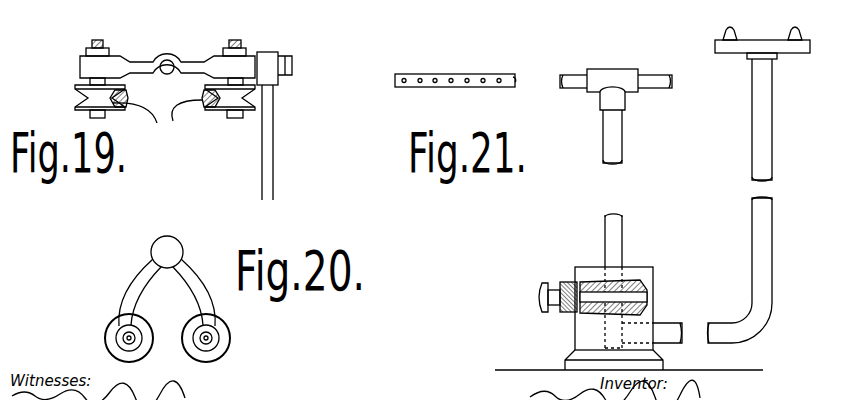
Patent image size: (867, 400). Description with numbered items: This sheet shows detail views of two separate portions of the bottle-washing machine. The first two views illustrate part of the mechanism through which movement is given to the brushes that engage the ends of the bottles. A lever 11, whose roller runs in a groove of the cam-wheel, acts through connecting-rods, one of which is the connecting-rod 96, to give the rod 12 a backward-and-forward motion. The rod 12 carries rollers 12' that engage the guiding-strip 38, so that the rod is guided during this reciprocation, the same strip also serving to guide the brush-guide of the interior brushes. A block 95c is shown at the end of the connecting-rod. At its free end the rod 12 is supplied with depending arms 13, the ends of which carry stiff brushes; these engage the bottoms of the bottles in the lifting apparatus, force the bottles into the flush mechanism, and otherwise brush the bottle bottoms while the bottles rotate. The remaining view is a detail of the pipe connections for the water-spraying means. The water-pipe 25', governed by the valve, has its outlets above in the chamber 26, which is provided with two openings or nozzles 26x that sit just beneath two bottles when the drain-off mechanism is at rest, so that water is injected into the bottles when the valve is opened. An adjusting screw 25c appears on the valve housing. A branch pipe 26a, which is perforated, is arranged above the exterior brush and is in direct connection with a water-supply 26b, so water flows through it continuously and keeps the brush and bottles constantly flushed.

In FIG. 19, the connecting-rod 96 is at (134, 63).
In FIG. 19, the rod 12 is at (162, 84).
In FIG. 20, the rod 12 is at (184, 248).
In FIG. 19, the block 95c is at (270, 62).
In FIG. 19, the lever 11 is at (273, 119).
In FIG. 19, the rollers 12' is at (175, 79).
In FIG. 19, the guiding-strip 38 is at (157, 122).
In FIG. 20, the depending arms 13 is at (191, 282).
In FIG. 21, the perforated pipe 26a is at (455, 75).
In FIG. 21, the water-supply 26b is at (629, 116).
In FIG. 21, the chamber 26 is at (757, 47).
In FIG. 21, the nozzles 26x is at (723, 35).
In FIG. 21, the adjusting screw 25c is at (563, 282).
In FIG. 21, the water-pipe 25' is at (736, 270).